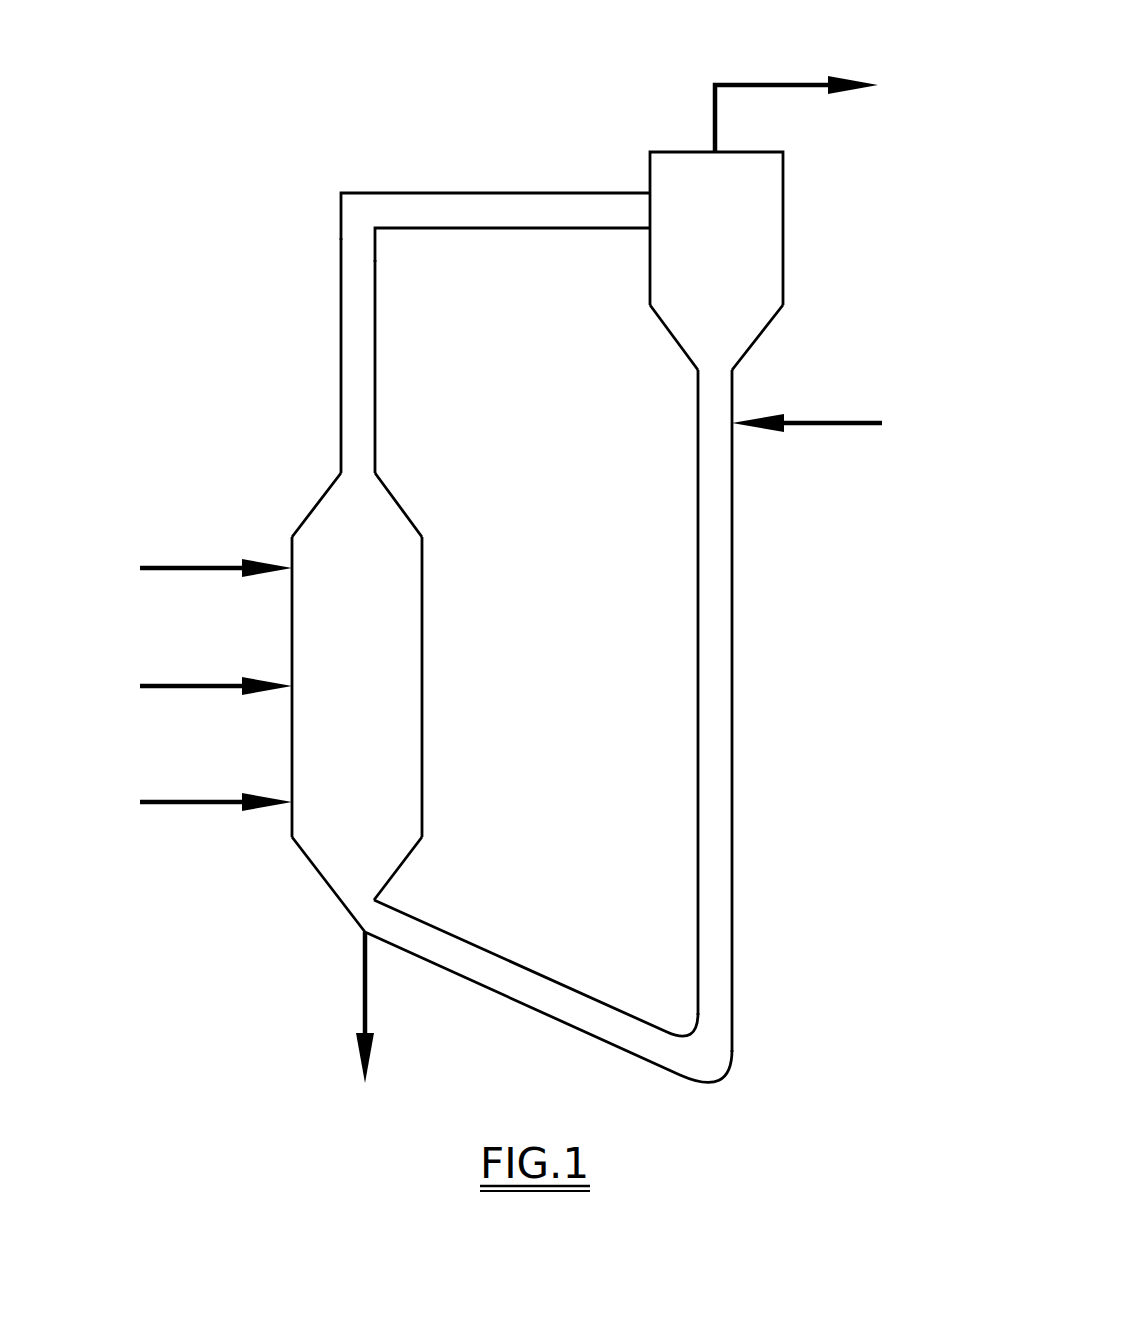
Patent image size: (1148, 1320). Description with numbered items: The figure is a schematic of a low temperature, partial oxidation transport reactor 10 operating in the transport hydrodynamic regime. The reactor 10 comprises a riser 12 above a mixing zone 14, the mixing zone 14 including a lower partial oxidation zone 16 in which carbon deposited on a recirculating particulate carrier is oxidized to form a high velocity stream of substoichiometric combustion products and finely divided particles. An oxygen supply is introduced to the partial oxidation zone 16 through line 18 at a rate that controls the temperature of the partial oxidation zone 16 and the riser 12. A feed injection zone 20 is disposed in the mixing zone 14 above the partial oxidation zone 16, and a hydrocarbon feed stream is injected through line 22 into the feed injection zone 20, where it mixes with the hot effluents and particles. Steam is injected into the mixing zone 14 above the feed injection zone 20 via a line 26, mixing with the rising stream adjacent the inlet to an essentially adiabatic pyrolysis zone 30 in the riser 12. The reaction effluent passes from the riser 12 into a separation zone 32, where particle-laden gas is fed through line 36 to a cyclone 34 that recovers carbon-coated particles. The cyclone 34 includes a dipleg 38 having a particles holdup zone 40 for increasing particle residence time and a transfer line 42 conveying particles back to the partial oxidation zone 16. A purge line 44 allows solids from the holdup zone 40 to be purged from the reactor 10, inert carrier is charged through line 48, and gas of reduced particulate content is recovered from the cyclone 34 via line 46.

The reactor 10 is at (216, 980).
The riser 12 is at (342, 353).
The mixing zone 14 is at (395, 588).
The partial oxidation zone 16 is at (320, 848).
The line 18 is at (197, 805).
The feed injection zone 20 is at (363, 732).
The line 22 is at (193, 689).
The line 26 is at (180, 572).
The pyrolysis zone 30 is at (360, 403).
The separation zone 32 is at (777, 239).
The cyclone 34 is at (753, 265).
The line 36 is at (542, 207).
The dipleg 38 is at (720, 550).
The particles holdup zone 40 is at (715, 763).
The transfer line 42 is at (473, 957).
The purge line 44 is at (363, 966).
The line 46 is at (753, 80).
The line 48 is at (820, 427).